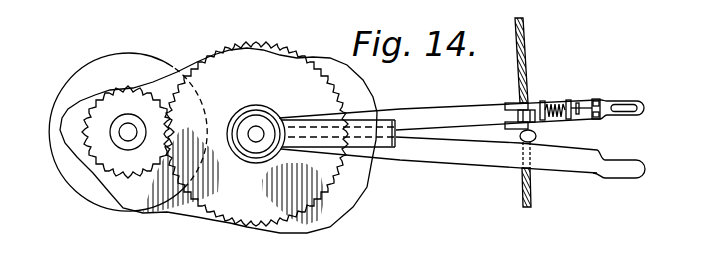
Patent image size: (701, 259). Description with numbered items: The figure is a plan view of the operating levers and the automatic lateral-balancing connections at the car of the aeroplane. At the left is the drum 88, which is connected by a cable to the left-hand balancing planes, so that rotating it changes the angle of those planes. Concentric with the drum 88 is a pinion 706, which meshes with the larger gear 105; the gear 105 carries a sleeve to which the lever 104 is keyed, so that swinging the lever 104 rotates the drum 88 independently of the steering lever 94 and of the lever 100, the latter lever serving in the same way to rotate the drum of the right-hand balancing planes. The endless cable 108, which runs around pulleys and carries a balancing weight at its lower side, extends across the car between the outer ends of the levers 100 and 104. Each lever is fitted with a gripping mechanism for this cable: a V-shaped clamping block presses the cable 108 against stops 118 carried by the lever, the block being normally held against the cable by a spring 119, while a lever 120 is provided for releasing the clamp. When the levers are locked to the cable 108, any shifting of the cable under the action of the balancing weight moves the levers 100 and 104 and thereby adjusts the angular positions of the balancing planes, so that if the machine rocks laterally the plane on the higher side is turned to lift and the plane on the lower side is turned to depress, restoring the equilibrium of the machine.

The drum 88 is at (70, 84).
The pinion 706 is at (112, 106).
The gear 105 is at (268, 33).
The steering lever 94 is at (372, 120).
The lever 104 is at (452, 100).
The lever 100 is at (473, 160).
The endless cable 108 is at (528, 58).
The stops 118 is at (512, 103).
The spring 119 is at (563, 100).
The lever 120 is at (633, 102).